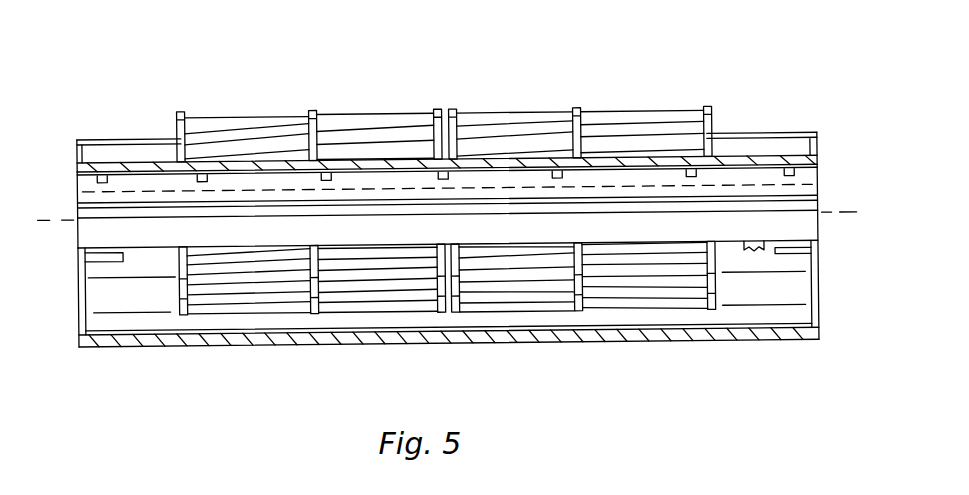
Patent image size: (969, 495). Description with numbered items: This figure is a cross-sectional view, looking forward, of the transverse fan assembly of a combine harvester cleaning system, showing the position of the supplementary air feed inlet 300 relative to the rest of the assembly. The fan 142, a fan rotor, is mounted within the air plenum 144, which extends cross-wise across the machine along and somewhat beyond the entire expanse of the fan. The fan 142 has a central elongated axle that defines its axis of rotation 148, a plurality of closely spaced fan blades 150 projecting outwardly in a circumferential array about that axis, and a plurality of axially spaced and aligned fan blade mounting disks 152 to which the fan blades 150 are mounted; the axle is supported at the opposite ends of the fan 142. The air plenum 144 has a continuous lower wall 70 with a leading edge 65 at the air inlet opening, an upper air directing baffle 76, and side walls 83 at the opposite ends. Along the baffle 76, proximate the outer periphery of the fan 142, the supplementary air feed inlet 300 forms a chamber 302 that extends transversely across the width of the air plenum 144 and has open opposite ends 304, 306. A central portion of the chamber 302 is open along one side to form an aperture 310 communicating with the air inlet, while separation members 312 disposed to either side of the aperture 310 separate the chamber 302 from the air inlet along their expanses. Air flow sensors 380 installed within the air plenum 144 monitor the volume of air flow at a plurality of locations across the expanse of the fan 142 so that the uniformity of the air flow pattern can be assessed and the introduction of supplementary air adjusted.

The leading edge 65 is at (112, 141).
The lower wall 70 is at (672, 349).
The baffle 76 is at (92, 236).
The side walls 83 is at (77, 154).
The fan 142 is at (736, 298).
The air plenum 144 is at (262, 362).
The axis of rotation 148 is at (848, 220).
The fan blades 150 is at (238, 152).
The fan blade mounting disks 152 is at (182, 112).
The supplementary air feed inlet 300 is at (802, 229).
The chamber 302 is at (809, 187).
The open end 304 is at (78, 212).
The open end 306 is at (805, 198).
The aperture 310 is at (452, 214).
The separation members 312 is at (276, 210).
The air flow sensors 380 is at (107, 184).